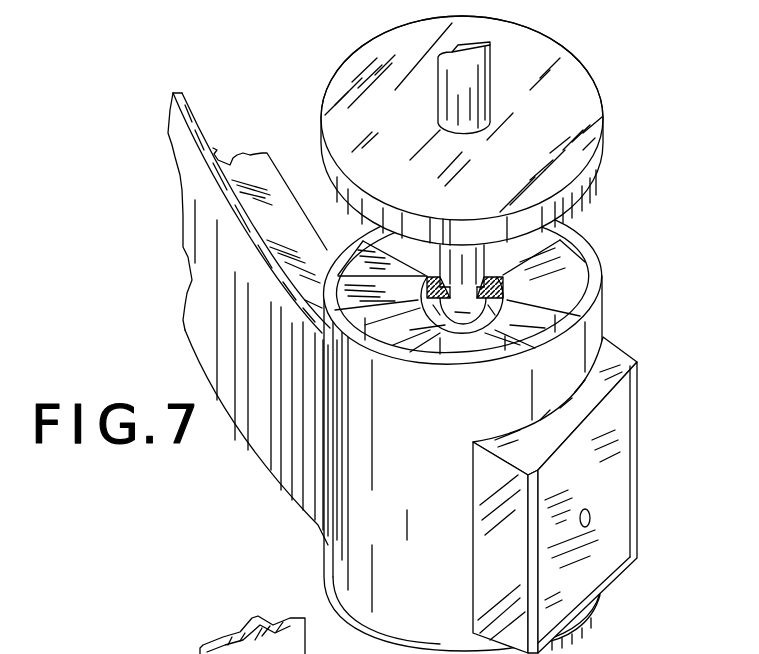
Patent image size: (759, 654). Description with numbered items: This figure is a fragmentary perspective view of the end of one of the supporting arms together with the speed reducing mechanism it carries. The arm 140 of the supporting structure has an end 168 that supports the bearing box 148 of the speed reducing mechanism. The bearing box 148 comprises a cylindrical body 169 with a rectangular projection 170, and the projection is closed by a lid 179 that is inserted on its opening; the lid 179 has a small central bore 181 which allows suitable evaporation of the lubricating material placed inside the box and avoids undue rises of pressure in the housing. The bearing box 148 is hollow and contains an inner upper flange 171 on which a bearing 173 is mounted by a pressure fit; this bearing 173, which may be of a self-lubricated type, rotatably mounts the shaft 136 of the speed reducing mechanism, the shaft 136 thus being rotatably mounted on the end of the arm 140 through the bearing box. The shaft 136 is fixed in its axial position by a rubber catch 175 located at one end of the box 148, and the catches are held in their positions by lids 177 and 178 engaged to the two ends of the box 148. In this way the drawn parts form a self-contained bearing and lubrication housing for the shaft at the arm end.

The shaft 136 is at (450, 98).
The arm 140 is at (187, 198).
The bearing box 148 is at (640, 318).
The end of arm 168 is at (305, 430).
The cylindrical body 169 is at (340, 515).
The rectangular projection 170 is at (638, 493).
The inner upper flange 171 is at (563, 271).
The bearing 173 is at (507, 305).
The rubber catch 175 is at (427, 278).
The lid 177 is at (592, 135).
The lid 178 is at (413, 645).
The lid 179 is at (612, 547).
The small central bore 181 is at (590, 518).